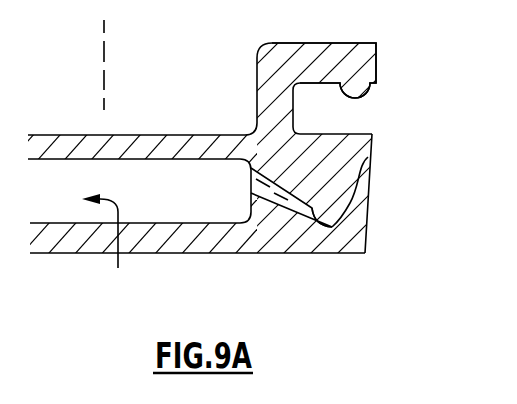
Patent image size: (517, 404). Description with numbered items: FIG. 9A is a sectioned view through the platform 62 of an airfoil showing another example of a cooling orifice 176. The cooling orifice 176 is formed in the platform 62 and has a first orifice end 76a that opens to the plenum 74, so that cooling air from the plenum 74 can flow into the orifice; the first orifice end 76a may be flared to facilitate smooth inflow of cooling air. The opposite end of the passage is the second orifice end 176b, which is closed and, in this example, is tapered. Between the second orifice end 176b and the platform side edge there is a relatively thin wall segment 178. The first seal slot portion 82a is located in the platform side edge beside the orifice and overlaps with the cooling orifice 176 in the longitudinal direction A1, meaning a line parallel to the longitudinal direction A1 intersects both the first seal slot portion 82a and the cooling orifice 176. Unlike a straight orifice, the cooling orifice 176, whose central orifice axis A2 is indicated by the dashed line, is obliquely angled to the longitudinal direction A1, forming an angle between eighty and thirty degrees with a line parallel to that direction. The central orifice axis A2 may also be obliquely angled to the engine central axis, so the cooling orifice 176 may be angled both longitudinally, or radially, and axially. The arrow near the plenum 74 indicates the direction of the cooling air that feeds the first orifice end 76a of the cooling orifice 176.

The longitudinal direction A1 is at (106, 52).
The central orifice axis A2 is at (274, 198).
The platform 62 is at (222, 254).
The plenum 74 is at (118, 268).
The first orifice end 76a is at (251, 190).
The first seal slot portion 82a is at (378, 84).
The cooling orifice 176 is at (370, 153).
The second orifice end 176b is at (320, 228).
The angled slot 178 is at (342, 231).